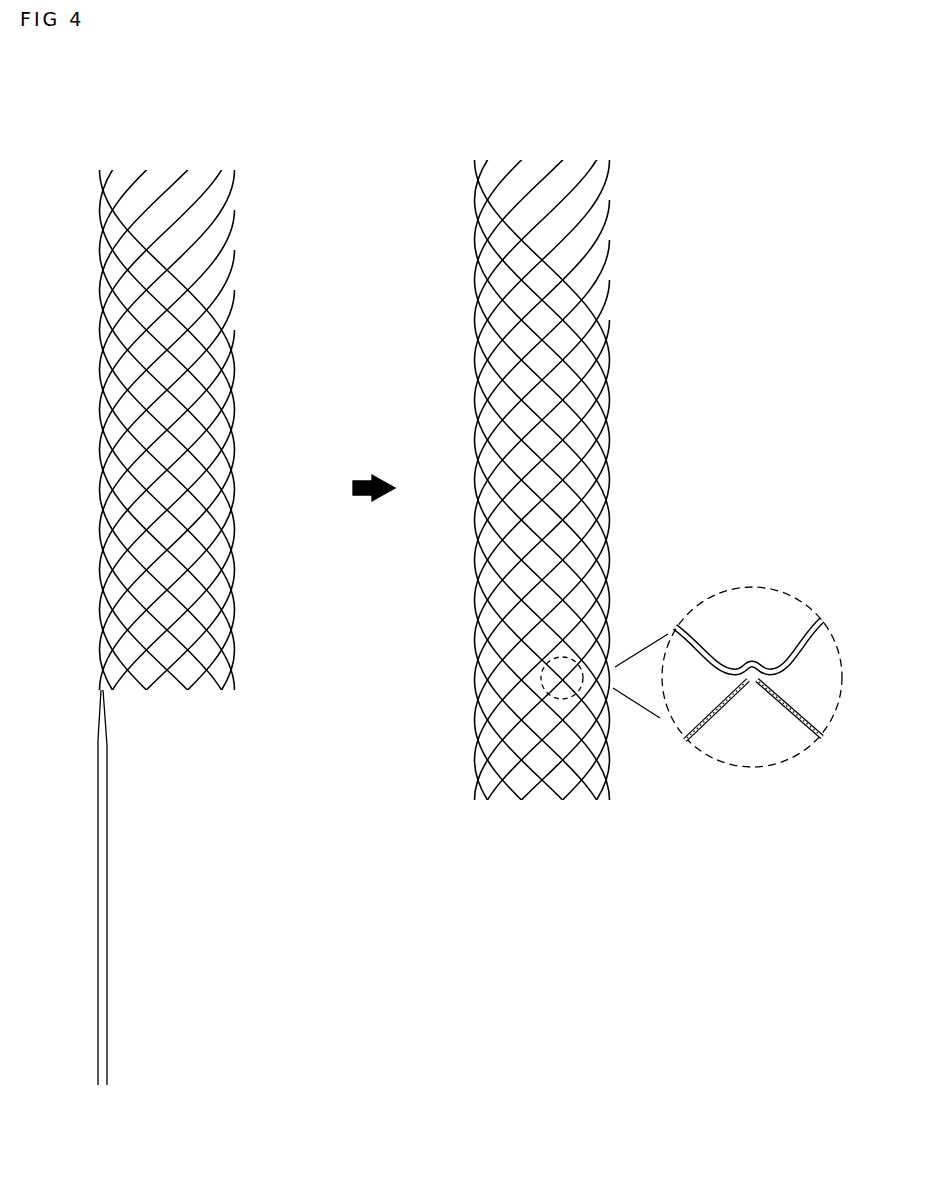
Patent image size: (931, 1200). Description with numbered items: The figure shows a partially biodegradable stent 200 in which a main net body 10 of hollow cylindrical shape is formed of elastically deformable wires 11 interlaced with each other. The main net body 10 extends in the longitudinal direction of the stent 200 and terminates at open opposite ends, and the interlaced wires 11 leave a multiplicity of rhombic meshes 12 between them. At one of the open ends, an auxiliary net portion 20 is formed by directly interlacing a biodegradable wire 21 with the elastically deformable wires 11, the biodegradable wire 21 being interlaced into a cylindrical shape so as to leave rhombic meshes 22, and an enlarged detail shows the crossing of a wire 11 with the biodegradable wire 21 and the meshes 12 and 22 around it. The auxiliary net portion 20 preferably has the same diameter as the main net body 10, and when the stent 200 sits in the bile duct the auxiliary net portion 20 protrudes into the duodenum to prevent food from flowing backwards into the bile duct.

The partially biodegradable stent 200 is at (461, 600).
The main net body 10 is at (461, 600).
The elastically deformable wires 11 is at (220, 240).
The rhombic meshes 12 is at (222, 390).
The auxiliary net portion 20 is at (633, 754).
The biodegradable wire 21 is at (107, 869).
The rhombic meshes 22 is at (593, 740).